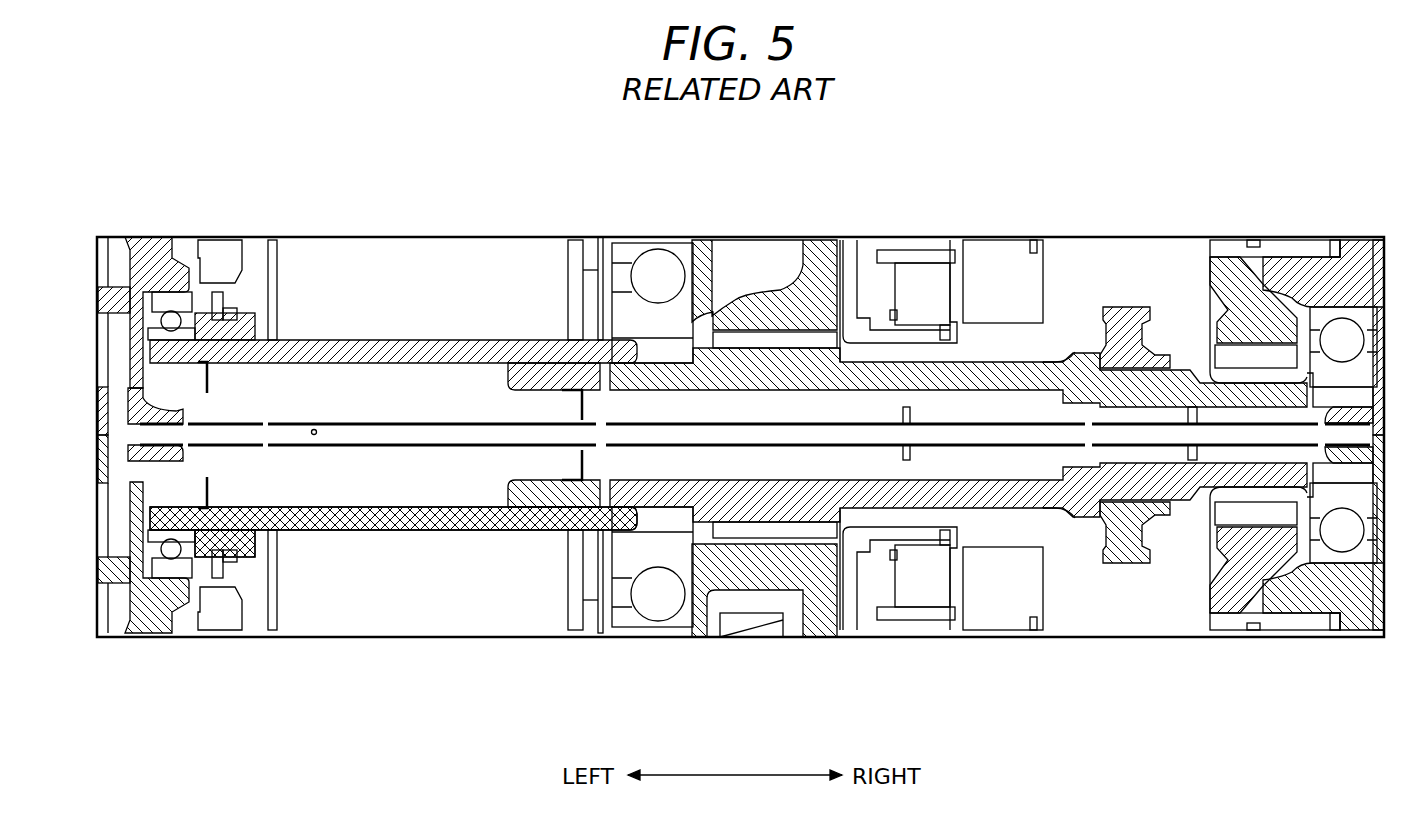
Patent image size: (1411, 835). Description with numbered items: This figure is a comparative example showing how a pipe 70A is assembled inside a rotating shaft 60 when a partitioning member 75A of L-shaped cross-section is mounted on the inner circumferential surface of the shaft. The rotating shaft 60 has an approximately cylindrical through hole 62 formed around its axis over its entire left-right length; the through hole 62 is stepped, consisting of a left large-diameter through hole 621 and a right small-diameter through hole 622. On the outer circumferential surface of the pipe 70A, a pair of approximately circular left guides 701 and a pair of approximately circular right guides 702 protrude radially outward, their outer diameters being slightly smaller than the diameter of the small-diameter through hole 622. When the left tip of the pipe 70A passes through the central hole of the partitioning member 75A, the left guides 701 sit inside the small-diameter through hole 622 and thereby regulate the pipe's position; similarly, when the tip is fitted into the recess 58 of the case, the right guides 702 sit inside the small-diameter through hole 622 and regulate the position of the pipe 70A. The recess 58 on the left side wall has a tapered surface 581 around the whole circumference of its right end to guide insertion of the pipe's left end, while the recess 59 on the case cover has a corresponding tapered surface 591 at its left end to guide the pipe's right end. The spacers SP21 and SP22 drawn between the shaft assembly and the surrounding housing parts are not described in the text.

The recess 58 is at (185, 455).
The tapered surface 581 is at (190, 458).
The spacer SP22 is at (440, 490).
The partitioning member 75A is at (583, 403).
The pipe 70A is at (737, 422).
The large-diameter through hole 621 is at (832, 400).
The rotating shaft 60 is at (988, 367).
The left guides 701 is at (907, 407).
The small-diameter through hole 622 is at (1124, 400).
The right guides 702 is at (1195, 407).
The tapered surface 591 is at (1300, 375).
The recess 59 is at (1333, 422).
The spacer SP21 is at (824, 463).
The through hole 62 is at (997, 467).